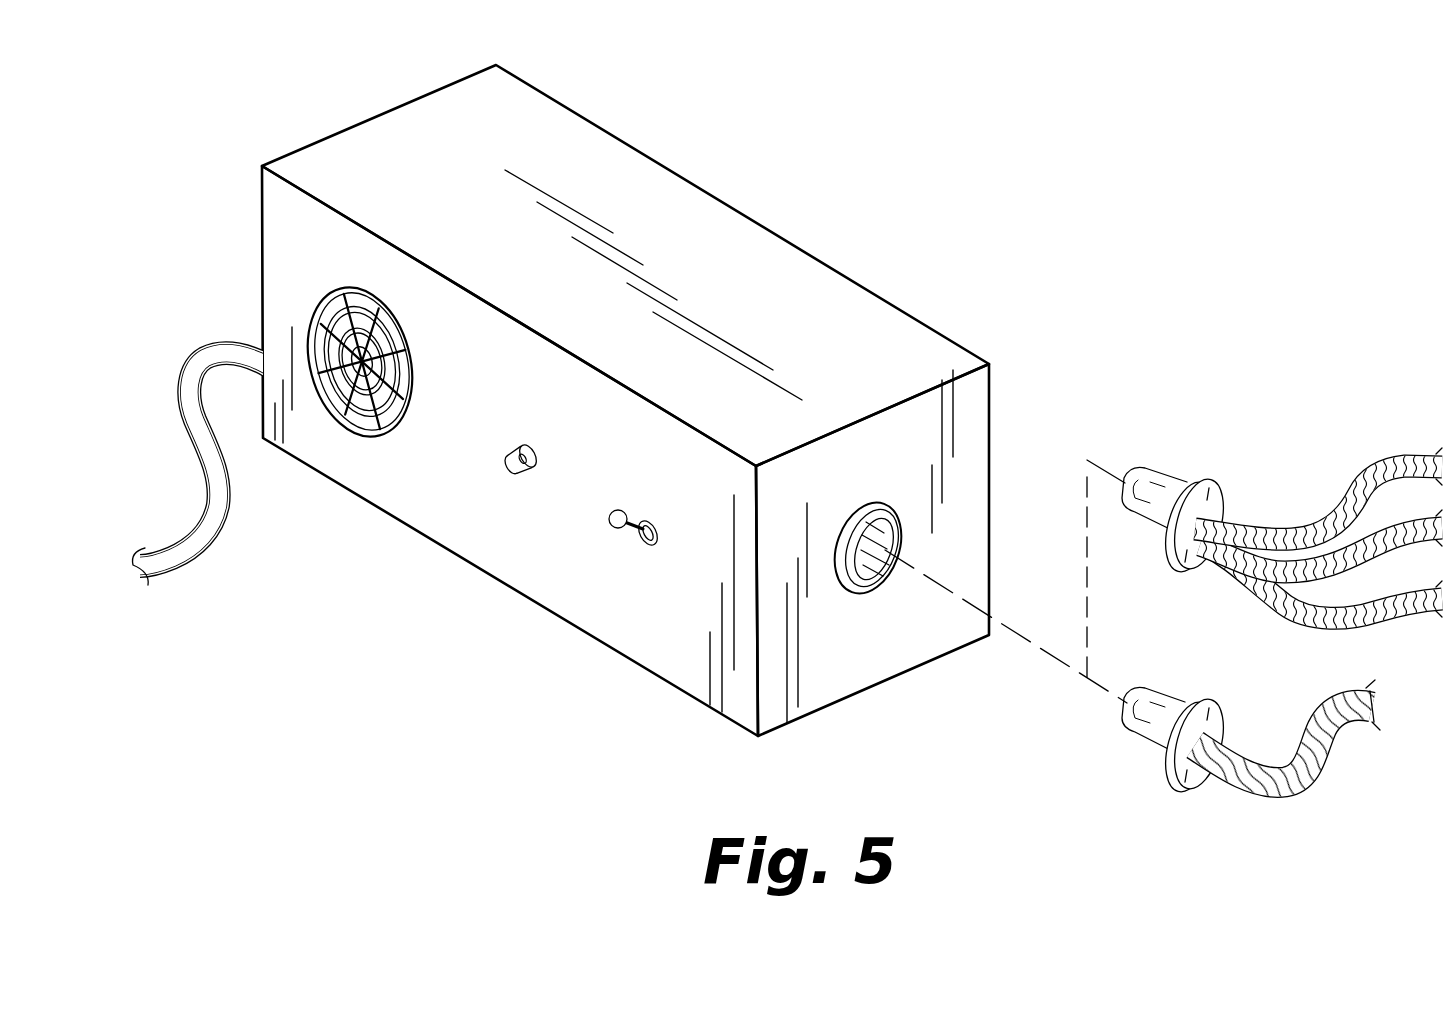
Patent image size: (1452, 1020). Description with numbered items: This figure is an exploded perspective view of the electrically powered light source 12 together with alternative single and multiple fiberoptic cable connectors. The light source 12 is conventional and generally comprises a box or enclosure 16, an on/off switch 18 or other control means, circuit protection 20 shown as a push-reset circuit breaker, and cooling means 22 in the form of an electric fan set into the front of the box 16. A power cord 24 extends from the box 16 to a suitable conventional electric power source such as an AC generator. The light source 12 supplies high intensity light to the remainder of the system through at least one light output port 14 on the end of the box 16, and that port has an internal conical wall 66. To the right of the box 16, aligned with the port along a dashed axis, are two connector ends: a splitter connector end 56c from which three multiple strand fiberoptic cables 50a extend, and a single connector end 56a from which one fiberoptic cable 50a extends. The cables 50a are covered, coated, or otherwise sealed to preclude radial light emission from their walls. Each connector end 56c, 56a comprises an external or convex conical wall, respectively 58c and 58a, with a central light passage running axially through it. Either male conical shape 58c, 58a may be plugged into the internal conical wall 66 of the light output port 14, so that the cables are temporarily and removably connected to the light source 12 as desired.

The light source 12 is at (438, 640).
The light output port 14 is at (852, 592).
The box 16 is at (742, 285).
The on/off switch 18 is at (619, 528).
The circuit protection 20 is at (510, 458).
The cooling means 22 is at (406, 342).
The power cord 24 is at (223, 520).
The fiberoptic cable 50a is at (1282, 510).
The connector end 56a is at (1218, 702).
The splitter connector end 56c is at (1210, 482).
The external conical wall 58a is at (1175, 695).
The external conical wall 58c is at (1163, 478).
The internal conical wall 66 is at (897, 585).